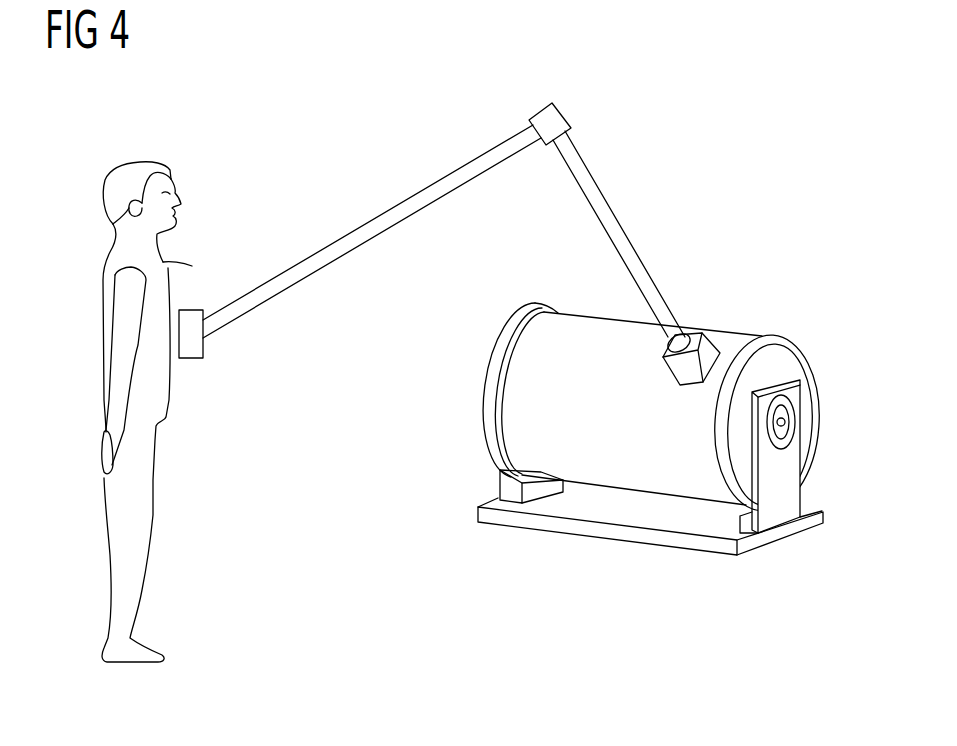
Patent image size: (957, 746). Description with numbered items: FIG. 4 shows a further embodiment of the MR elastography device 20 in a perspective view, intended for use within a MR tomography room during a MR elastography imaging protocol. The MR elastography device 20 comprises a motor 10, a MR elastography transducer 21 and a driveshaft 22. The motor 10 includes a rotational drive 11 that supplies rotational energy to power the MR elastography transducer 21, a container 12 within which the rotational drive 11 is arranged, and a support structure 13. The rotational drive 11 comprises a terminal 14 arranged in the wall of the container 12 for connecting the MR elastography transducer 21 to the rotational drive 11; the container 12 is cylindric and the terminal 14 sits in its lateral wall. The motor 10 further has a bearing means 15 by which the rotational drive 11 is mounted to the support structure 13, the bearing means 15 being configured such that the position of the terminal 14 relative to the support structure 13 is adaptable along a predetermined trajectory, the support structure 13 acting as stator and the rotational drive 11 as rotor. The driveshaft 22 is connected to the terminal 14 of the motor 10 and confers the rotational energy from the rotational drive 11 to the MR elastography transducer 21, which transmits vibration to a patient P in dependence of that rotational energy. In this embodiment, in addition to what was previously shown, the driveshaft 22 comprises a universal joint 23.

The motor 10 is at (679, 399).
The rotational drive 11 is at (592, 337).
The container 12 is at (795, 360).
The support structure 13 is at (785, 535).
The terminal 14 is at (707, 352).
The bearing means 15 is at (787, 421).
The MR elastography device 20 is at (432, 258).
The MR elastography transducer 21 is at (197, 360).
The driveshaft 22 is at (383, 224).
The universal joint 23 is at (557, 120).
The patient P is at (198, 264).